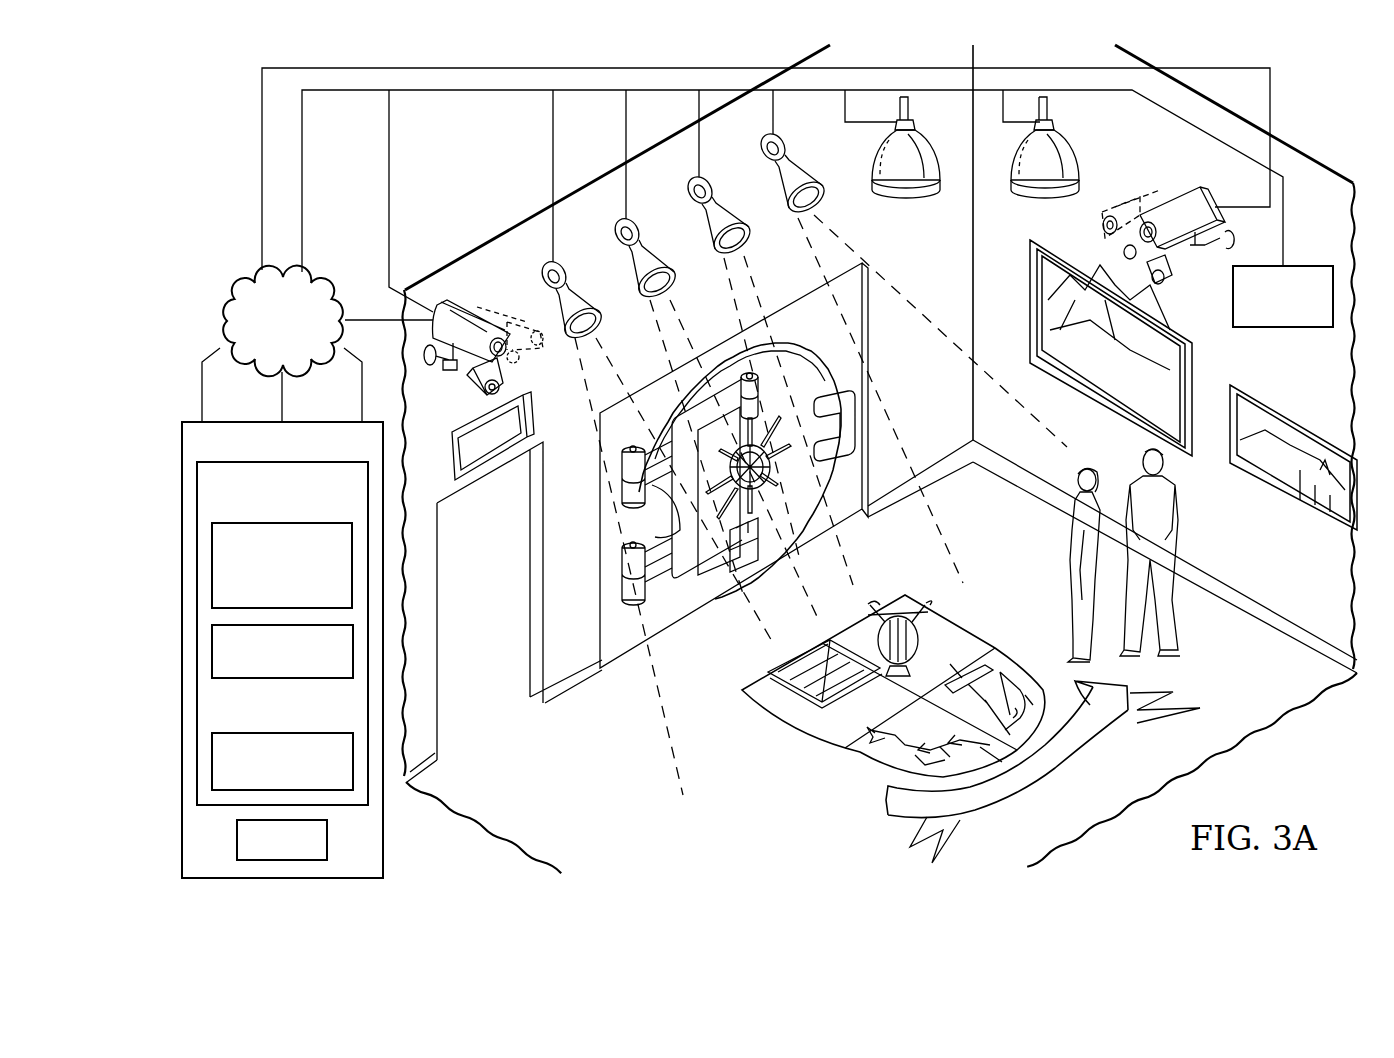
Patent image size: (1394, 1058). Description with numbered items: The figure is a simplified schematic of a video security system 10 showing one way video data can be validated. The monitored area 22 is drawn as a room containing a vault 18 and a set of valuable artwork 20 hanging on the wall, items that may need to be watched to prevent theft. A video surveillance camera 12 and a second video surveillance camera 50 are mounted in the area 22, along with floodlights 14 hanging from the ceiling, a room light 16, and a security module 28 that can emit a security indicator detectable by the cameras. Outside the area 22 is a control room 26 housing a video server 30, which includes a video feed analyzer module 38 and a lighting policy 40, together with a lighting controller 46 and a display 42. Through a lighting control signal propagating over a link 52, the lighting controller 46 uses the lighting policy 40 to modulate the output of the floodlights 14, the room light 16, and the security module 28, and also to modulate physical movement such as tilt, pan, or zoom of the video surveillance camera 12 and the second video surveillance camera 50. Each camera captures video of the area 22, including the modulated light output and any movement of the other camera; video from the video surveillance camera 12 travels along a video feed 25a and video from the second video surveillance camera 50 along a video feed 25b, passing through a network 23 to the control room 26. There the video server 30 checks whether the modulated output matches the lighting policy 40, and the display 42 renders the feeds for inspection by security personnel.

The video security system 10 is at (1330, 108).
The video surveillance camera 12 is at (443, 306).
The floodlights 14 is at (575, 302).
The room light 16 is at (907, 203).
The vault 18 is at (860, 324).
The artwork 20 is at (1190, 342).
The area 22 is at (592, 776).
The network 23 is at (233, 287).
The video feed 25a is at (375, 320).
The video feed 25b is at (260, 167).
The control room 26 is at (392, 818).
The security module 28 is at (1297, 265).
The video server 30 is at (226, 810).
The video feed analyzer module 38 is at (237, 522).
The lighting policy 40 is at (263, 680).
The display 42 is at (328, 840).
The lighting controller 46 is at (305, 733).
The second video surveillance camera 50 is at (1213, 187).
The link 52 is at (352, 90).